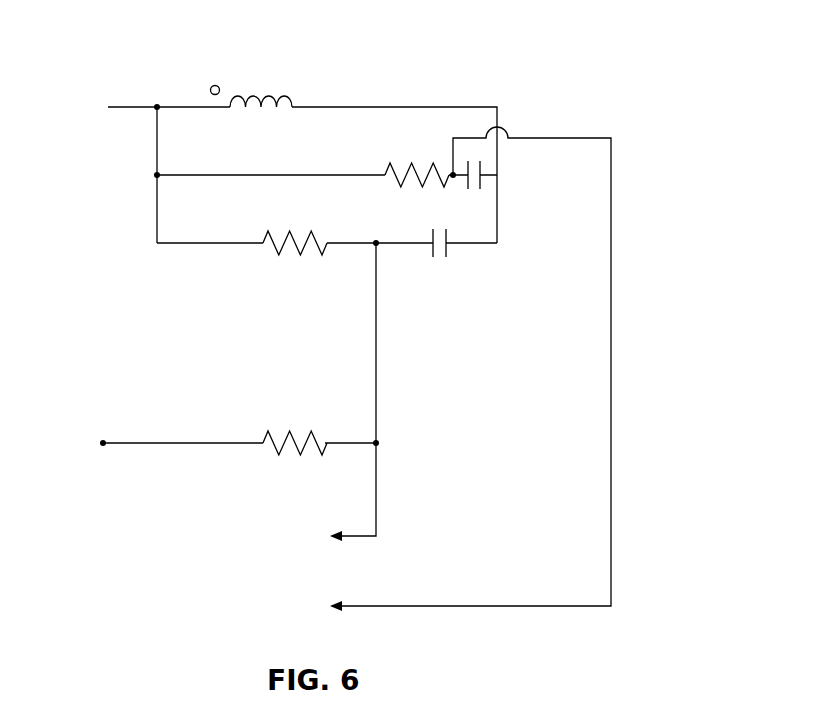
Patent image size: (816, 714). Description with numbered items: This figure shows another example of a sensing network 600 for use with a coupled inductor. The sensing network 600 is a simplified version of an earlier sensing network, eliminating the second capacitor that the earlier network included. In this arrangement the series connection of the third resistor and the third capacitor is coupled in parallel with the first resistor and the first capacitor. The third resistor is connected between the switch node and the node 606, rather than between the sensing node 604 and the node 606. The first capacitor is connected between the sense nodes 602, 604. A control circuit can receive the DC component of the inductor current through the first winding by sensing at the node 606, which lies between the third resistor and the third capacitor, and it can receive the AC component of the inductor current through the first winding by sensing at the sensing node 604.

The sensing network 600 is at (610, 61).
The sense node 602 is at (488, 243).
The sensing node 604 is at (375, 247).
The node 606 is at (453, 172).